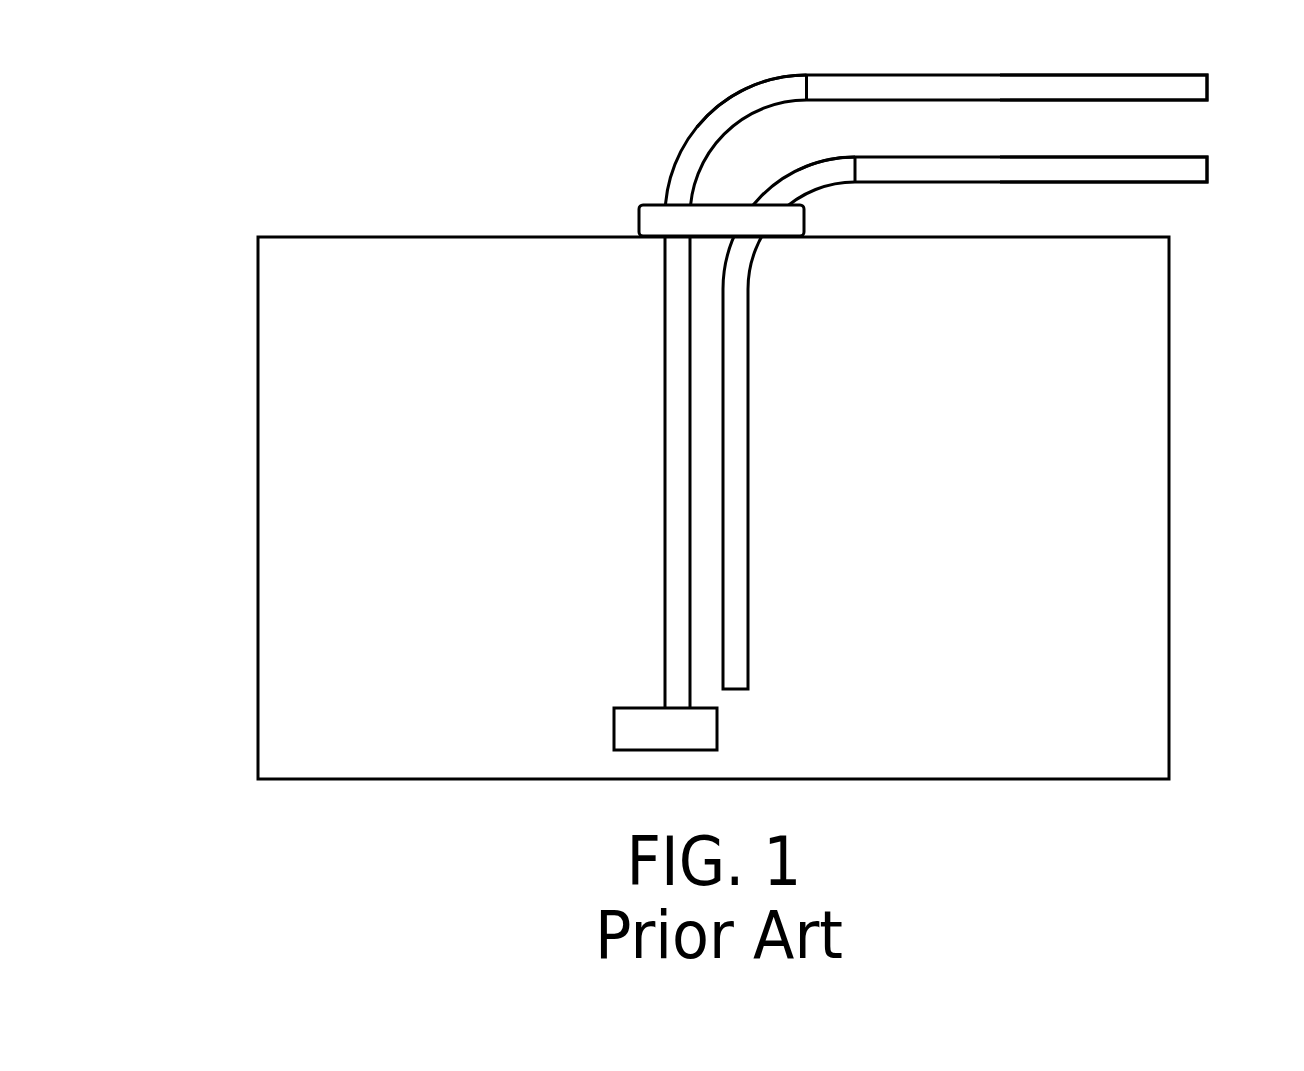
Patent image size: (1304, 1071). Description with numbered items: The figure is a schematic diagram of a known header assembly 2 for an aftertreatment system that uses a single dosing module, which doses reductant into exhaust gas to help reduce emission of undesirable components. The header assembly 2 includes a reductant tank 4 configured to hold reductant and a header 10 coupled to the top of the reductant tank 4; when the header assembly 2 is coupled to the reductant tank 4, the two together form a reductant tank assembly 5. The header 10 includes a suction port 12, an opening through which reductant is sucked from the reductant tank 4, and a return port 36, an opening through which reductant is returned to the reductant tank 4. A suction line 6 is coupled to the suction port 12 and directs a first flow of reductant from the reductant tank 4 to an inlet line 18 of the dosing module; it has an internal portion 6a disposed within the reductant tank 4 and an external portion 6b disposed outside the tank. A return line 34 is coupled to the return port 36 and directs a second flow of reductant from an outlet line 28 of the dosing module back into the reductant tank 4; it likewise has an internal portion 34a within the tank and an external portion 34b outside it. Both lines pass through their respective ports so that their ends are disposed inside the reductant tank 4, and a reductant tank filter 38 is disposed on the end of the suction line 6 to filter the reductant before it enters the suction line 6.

The header assembly 2 is at (547, 127).
The reductant tank 4 is at (258, 339).
The reductant tank assembly 5 is at (219, 158).
The suction line 6 is at (696, 127).
The internal portion 6a is at (665, 338).
The external portion 6b is at (717, 107).
The header 10 is at (639, 222).
The suction port 12 is at (678, 203).
The inlet line 18 is at (1207, 87).
The outlet line 28 is at (1207, 168).
The return line 34 is at (825, 186).
The internal portion 34a is at (752, 332).
The external portion 34b is at (798, 170).
The return port 36 is at (753, 203).
The reductant tank filter 38 is at (614, 728).